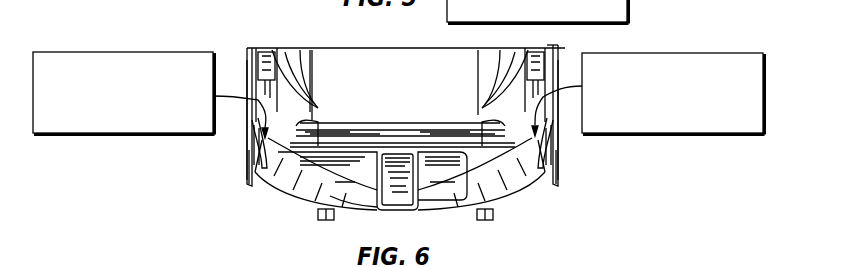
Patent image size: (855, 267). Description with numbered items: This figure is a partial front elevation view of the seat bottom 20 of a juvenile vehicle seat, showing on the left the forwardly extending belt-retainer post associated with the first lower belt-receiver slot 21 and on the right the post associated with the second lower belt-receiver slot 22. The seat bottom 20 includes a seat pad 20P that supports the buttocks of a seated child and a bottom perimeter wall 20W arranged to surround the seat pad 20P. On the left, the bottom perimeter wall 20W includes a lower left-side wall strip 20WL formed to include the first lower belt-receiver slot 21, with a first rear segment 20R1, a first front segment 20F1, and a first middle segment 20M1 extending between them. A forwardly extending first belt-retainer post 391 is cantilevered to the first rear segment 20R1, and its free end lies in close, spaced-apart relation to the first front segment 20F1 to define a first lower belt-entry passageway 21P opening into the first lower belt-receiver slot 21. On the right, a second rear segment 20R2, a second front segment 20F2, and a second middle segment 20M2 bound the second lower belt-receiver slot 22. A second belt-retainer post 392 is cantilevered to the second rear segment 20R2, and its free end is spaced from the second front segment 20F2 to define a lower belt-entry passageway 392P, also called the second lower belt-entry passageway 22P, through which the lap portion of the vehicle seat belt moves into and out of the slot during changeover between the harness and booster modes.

The seat bottom 20 is at (523, 205).
The bottom perimeter wall 20W is at (360, 203).
The lower left-side wall strip 20WL is at (245, 80).
The first front segment 20F1 is at (292, 187).
The second front segment 20F2 is at (492, 200).
The first rear segment 20R1 is at (270, 97).
The second rear segment 20R2 is at (530, 95).
The seat pad 20P is at (417, 84).
The first middle segment 20M1 is at (305, 135).
The second middle segment 20M2 is at (500, 128).
The first lower belt-receiver slot 21 is at (123, 135).
The second lower belt-receiver slot 22 is at (680, 135).
The first lower belt-entry passageway 21P is at (249, 193).
The second lower belt-entry passageway 22P is at (550, 195).
The first belt-retainer post 391 is at (248, 161).
The second belt-retainer post 392 is at (547, 170).
The lower belt-entry passageway 392P is at (642, 0).